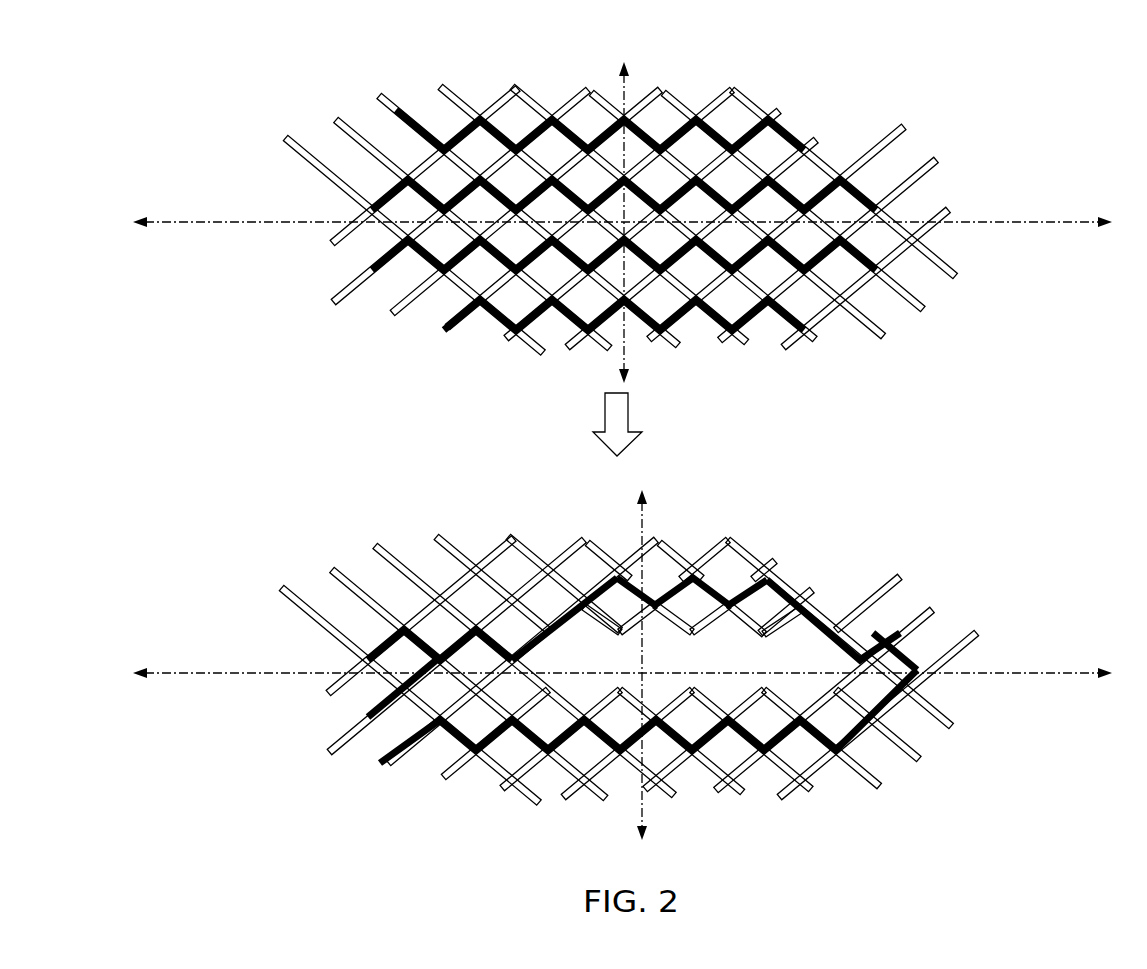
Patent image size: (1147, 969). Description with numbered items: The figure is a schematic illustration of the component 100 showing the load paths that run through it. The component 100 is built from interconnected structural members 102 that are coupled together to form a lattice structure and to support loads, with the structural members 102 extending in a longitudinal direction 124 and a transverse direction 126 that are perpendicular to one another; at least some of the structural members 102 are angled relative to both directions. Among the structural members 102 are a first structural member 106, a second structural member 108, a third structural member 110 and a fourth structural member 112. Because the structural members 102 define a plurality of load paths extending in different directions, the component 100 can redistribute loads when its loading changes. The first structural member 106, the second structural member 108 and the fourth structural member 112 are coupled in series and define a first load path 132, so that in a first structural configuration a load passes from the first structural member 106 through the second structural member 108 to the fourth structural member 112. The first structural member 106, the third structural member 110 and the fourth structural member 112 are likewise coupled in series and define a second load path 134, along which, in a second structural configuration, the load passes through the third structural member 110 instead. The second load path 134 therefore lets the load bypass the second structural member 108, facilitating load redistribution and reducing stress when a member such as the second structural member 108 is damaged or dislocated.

The component 100 is at (318, 91).
The structural members 102 is at (735, 90).
The first structural member 106 is at (497, 236).
The second structural member 108 is at (560, 247).
The third structural member 110 is at (596, 95).
The fourth structural member 112 is at (590, 228).
The longitudinal direction 124 is at (1042, 218).
The transverse direction 126 is at (628, 364).
The first load paths 132 is at (408, 118).
The second load paths 134 is at (378, 640).